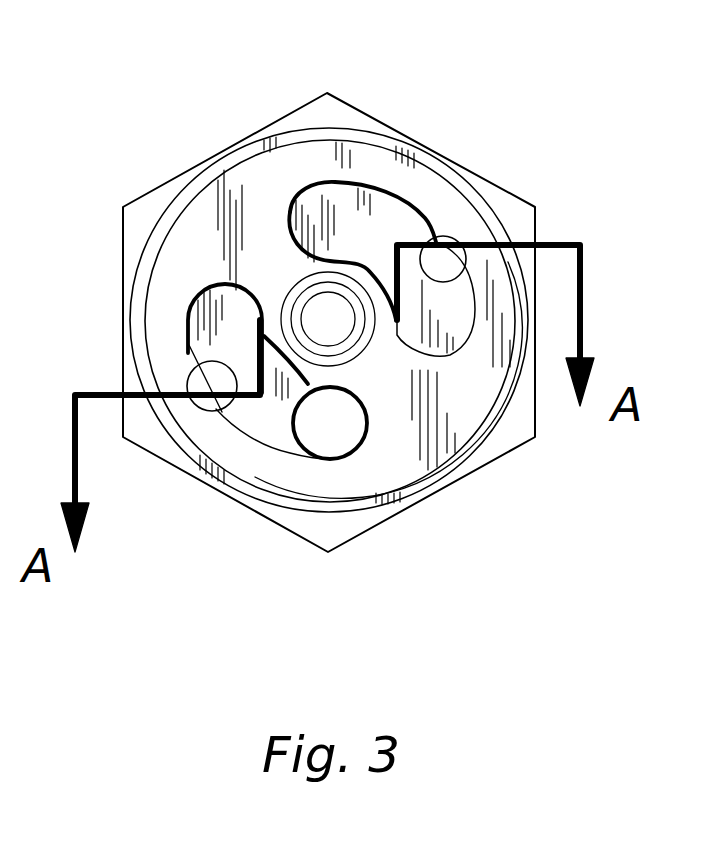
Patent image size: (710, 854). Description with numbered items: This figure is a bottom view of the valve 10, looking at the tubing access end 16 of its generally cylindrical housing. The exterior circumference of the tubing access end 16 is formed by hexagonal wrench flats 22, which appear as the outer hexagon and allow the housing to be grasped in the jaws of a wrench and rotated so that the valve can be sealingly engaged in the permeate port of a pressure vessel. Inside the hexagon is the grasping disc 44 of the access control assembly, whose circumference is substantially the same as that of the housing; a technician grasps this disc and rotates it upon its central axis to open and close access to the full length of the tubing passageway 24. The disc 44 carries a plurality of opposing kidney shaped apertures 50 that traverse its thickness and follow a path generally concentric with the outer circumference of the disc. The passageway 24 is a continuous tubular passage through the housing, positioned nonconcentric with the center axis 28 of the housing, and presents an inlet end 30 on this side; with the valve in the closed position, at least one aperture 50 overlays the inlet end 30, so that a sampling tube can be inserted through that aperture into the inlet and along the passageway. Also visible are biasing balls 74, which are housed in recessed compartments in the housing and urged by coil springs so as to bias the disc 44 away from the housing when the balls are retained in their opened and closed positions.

The valve 10 is at (481, 487).
The tubing access end 16 is at (347, 516).
The hexagonal wrench flats 22 is at (482, 177).
The tubing passageway 24 is at (342, 415).
The center axis 28 is at (324, 317).
The inlet end 30 is at (293, 430).
The grasping disc 44 is at (373, 160).
The kidney shaped apertures 50 is at (320, 180).
The biasing balls 74 is at (448, 264).